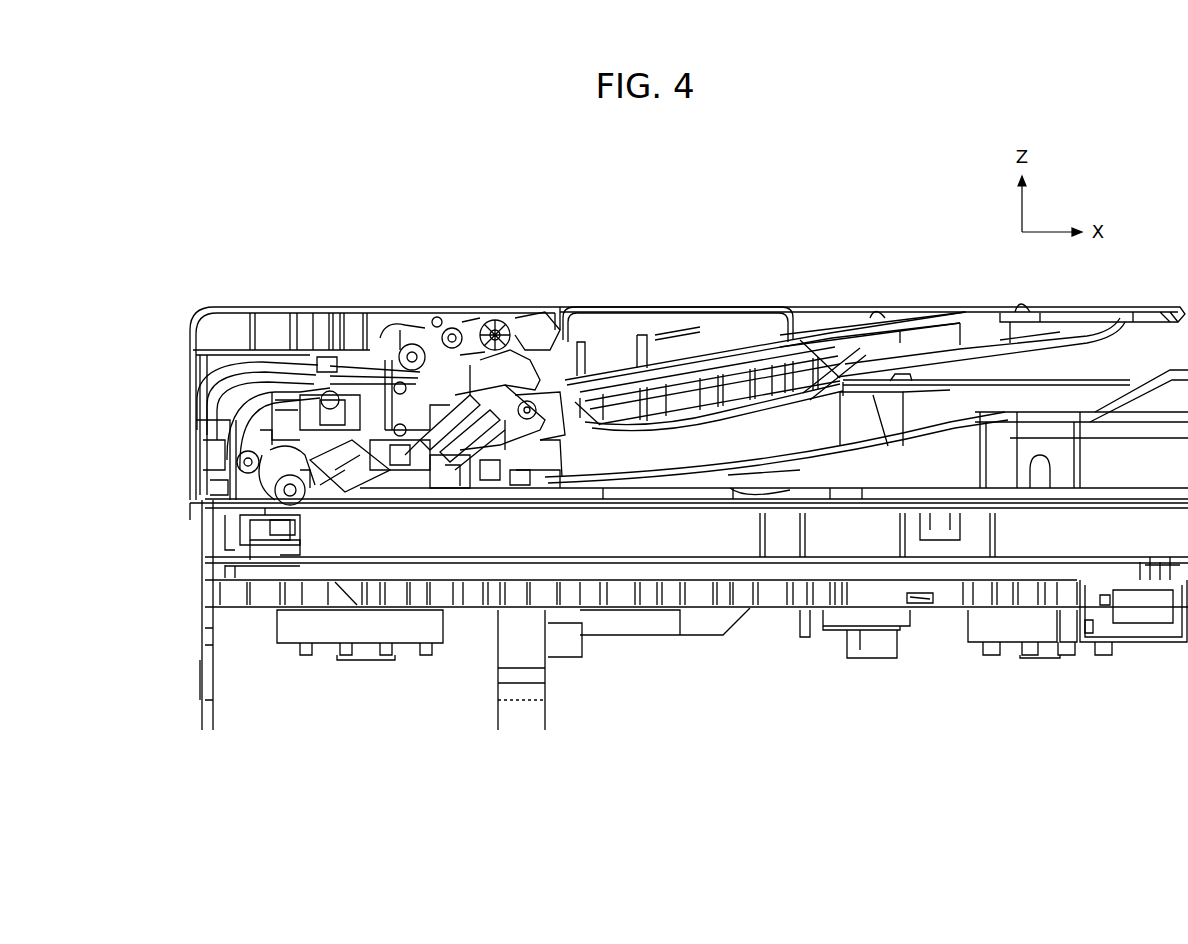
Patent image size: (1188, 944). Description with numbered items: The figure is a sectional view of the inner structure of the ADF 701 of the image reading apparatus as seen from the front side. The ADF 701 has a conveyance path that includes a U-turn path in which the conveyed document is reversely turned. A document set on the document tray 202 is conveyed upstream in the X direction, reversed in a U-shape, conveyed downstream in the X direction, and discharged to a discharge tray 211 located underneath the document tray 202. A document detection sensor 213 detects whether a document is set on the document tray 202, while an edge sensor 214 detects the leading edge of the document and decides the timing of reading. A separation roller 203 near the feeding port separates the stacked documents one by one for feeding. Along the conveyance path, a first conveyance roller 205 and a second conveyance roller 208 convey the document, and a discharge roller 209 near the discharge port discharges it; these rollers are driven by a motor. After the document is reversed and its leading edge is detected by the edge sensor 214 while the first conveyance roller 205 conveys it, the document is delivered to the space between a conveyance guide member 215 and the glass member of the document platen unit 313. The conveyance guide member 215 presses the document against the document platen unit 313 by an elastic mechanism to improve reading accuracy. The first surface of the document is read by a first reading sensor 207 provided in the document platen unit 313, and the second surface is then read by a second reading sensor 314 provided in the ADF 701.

The ADF 701 is at (308, 283).
The document tray 202 is at (833, 315).
The separation roller 203 is at (395, 424).
The first conveyance roller 205 is at (243, 455).
The first reading sensor 207 is at (283, 525).
The second conveyance roller 208 is at (395, 428).
The discharge roller 209 is at (532, 408).
The discharge tray 211 is at (697, 466).
The document detection sensor 213 is at (492, 382).
The edge sensor 214 is at (240, 497).
The conveyance guide member 215 is at (289, 485).
The document platen unit 313 is at (253, 510).
The second reading sensor 314 is at (352, 450).